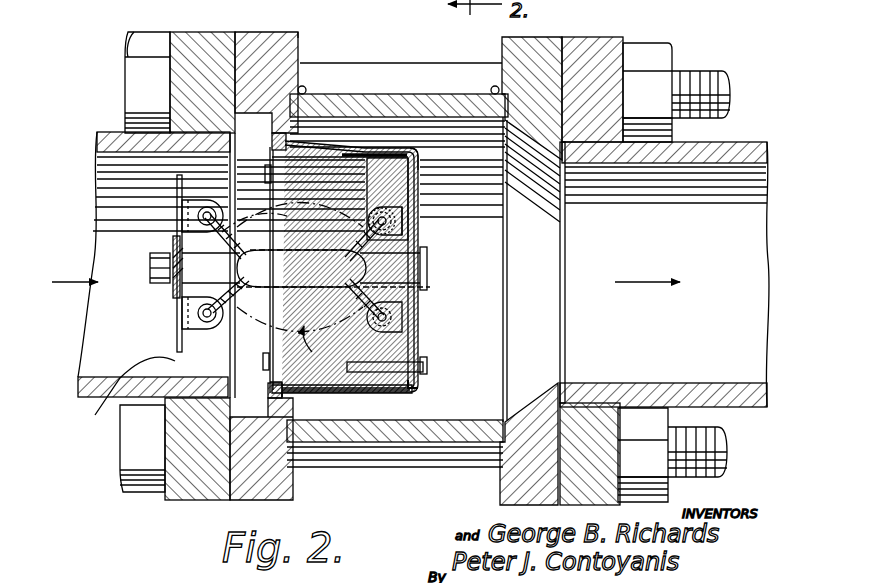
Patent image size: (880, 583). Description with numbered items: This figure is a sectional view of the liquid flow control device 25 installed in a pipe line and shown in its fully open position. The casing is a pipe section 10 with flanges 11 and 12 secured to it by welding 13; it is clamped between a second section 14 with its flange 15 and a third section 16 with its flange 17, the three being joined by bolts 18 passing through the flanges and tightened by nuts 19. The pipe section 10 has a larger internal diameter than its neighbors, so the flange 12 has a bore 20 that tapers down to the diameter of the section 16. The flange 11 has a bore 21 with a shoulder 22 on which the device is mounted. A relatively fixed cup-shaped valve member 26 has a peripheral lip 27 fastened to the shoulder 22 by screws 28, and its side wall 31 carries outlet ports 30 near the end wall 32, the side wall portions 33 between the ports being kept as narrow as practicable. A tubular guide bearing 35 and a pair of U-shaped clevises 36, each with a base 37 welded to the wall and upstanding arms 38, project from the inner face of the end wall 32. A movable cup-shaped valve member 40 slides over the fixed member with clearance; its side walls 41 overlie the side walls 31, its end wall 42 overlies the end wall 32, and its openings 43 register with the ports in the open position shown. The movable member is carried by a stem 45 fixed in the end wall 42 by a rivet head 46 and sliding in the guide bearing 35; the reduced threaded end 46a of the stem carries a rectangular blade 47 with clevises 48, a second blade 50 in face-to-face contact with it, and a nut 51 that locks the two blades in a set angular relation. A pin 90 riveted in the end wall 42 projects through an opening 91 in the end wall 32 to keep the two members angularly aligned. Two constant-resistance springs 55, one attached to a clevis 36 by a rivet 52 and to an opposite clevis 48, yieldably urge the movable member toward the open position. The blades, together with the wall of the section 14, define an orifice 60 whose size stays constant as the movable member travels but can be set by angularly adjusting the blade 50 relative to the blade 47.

The pipe section 10 is at (432, 437).
The flange 11 is at (296, 45).
The flange 12 is at (500, 40).
The welding 13 is at (305, 87).
The second section 14 is at (105, 142).
The flange 15 is at (198, 40).
The third section 16 is at (733, 143).
The flange 17 is at (606, 37).
The bolt 18 is at (128, 62).
The nut 19 is at (660, 55).
The bore 20 is at (536, 400).
The bore 21 is at (253, 120).
The shoulder 22 is at (318, 108).
The liquid flow control device 25 is at (436, 318).
The fixed valve member 26 is at (283, 197).
The peripheral lip 27 is at (259, 393).
The screw 28 is at (263, 358).
The outlet port 30 is at (367, 182).
The side wall 31 is at (355, 152).
The end wall 32 is at (413, 173).
The side wall portion 33 is at (384, 159).
The guide bearing 35 is at (318, 274).
The clevis 36 is at (390, 205).
The base 37 is at (423, 218).
The upstanding arm 38 is at (366, 212).
The movable valve member 40 is at (360, 400).
The side wall 41 is at (330, 140).
The end wall 42 is at (423, 303).
The opening 43 is at (385, 148).
The stem 45 is at (185, 292).
The rivet head 46 is at (427, 268).
The reduced threaded end 46a is at (150, 268).
The blade 47 is at (176, 182).
The clevis 48 is at (208, 201).
The second blade 50 is at (172, 290).
The nut 51 is at (158, 280).
The rivet 52 is at (388, 224).
The spring 55 is at (300, 218).
The orifice 60 is at (118, 394).
The pin 90 is at (383, 367).
The opening 91 is at (423, 388).